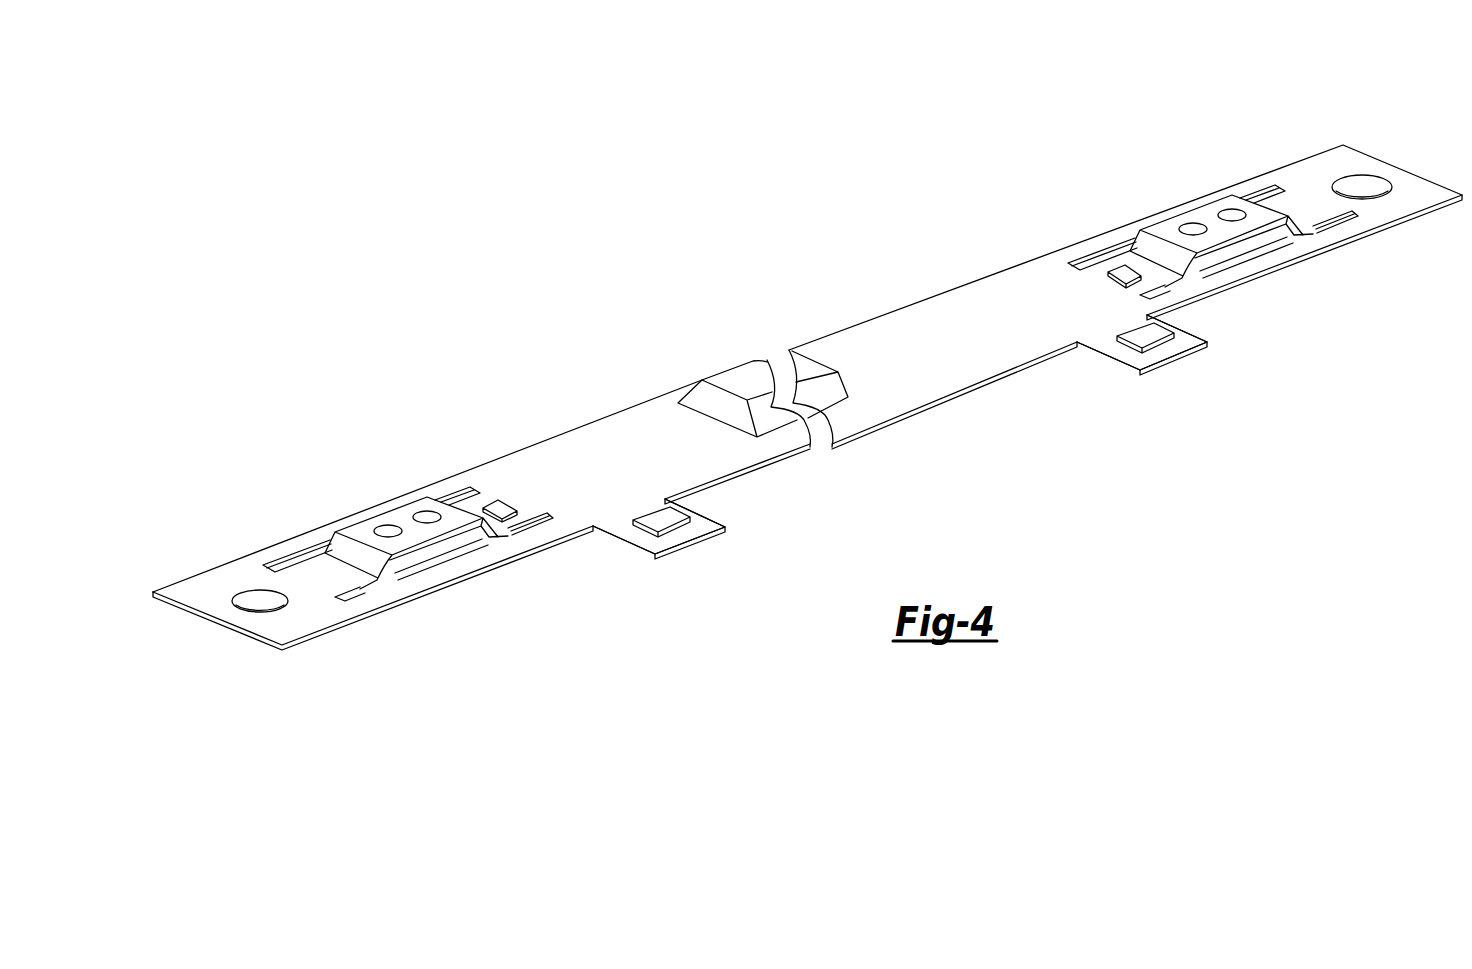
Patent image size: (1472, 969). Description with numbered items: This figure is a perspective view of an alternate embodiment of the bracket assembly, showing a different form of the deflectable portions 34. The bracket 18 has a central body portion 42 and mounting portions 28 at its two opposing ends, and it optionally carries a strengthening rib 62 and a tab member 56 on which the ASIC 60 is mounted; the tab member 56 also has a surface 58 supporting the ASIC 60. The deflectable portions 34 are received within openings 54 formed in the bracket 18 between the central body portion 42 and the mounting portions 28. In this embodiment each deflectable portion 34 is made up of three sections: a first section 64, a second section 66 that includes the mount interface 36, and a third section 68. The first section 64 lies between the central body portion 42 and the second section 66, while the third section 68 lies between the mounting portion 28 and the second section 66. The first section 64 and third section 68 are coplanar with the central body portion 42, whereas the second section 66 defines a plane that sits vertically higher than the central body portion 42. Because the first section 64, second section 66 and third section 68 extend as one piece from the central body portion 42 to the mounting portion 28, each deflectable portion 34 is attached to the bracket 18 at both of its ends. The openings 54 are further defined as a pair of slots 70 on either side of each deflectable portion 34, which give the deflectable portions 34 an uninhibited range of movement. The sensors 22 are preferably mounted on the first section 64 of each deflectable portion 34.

The bracket 18 is at (527, 357).
The sensors 22 is at (500, 507).
The mounting portions 28 is at (277, 623).
The deflectable portions 34 is at (425, 445).
The mount interface 36 is at (403, 515).
The central body portion 42 is at (908, 394).
The openings 54 is at (293, 548).
The tab member 56 is at (640, 537).
The tab surface 58 is at (680, 524).
The ASIC 60 is at (661, 514).
The strengthening rib 62 is at (737, 378).
The first section 64 is at (524, 505).
The second section 66 is at (443, 538).
The third section 68 is at (327, 585).
The slots 70 is at (283, 565).